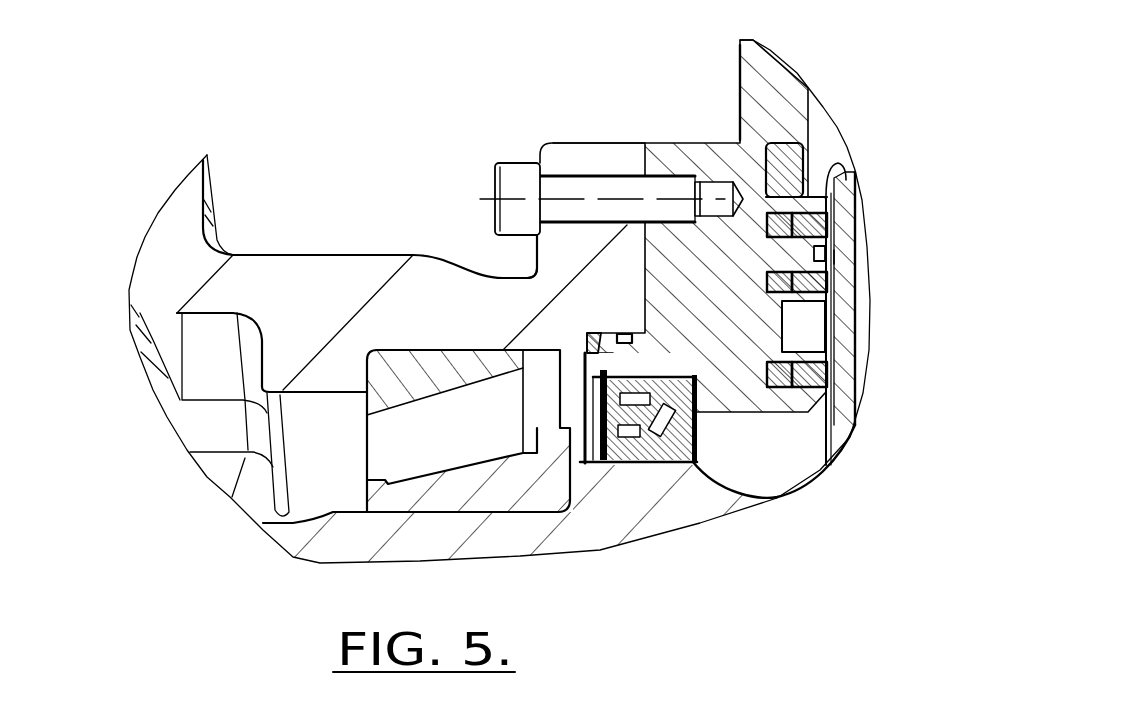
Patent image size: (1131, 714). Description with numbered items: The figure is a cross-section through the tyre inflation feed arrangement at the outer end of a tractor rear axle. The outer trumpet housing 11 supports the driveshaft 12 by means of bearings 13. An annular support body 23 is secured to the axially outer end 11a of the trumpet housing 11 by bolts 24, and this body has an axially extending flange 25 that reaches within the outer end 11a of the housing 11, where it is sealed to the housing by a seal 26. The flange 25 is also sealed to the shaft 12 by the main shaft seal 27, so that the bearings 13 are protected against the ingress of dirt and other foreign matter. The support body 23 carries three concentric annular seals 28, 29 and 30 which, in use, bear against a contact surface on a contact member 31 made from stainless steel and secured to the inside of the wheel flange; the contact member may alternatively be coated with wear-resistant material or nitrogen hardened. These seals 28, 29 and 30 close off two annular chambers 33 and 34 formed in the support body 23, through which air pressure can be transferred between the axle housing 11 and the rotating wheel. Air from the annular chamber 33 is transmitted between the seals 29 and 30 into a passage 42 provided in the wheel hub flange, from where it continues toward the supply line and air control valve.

The trumpet housing 11 is at (298, 283).
The axially outer end 11a is at (598, 158).
The driveshaft 12 is at (602, 513).
The bearings 13 is at (465, 417).
The annular support body 23 is at (738, 163).
The bolts 24 is at (512, 170).
The axially extending flange 25 is at (587, 343).
The seal 26 is at (618, 333).
The main shaft seal 27 is at (655, 455).
The annular seal 28 is at (833, 238).
The annular seal 29 is at (835, 290).
The annular seal 30 is at (815, 373).
The contact member 31 is at (847, 270).
The annular chamber 33 is at (807, 332).
The annular chamber 34 is at (833, 257).
The passage 42 is at (790, 150).